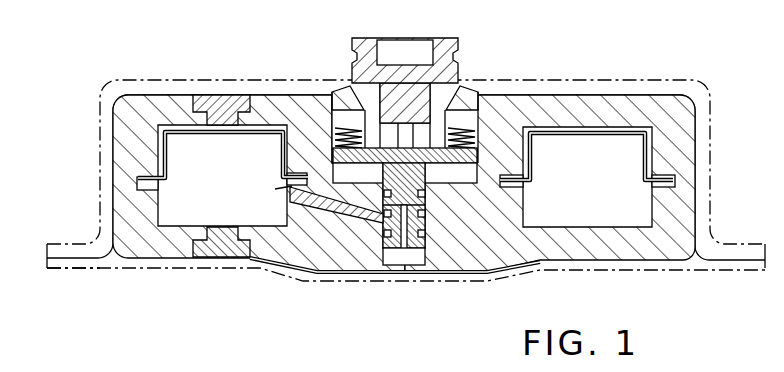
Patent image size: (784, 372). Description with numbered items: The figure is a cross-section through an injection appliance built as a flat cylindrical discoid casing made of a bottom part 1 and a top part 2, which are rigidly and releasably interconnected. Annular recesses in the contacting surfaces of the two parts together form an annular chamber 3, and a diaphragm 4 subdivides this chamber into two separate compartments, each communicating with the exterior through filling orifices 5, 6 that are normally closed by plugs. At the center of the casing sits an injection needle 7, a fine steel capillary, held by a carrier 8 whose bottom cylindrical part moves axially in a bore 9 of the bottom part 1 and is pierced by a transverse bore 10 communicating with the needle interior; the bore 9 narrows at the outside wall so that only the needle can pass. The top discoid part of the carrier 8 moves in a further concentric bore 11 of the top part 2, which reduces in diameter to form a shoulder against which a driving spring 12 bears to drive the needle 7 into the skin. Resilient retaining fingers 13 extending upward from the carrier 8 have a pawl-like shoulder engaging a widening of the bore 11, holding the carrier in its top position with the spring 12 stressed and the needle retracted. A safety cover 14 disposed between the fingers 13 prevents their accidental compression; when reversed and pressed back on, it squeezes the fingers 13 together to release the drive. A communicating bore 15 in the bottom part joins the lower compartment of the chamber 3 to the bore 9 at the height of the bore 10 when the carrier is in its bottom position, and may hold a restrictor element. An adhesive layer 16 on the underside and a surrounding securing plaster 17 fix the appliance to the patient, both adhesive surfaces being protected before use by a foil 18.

The bottom part 1 is at (657, 250).
The top part 2 is at (642, 100).
The annular chamber 3 is at (590, 217).
The diaphragm 4 is at (182, 128).
The filling orifice 5 is at (210, 253).
The filling orifice 6 is at (229, 97).
The injection needle 7 is at (415, 240).
The carrier 8 is at (422, 215).
The bore 9 is at (388, 247).
The bore 10 is at (428, 218).
The further concentric bore 11 is at (480, 147).
The driving spring 12 is at (347, 110).
The resilient retaining fingers 13 is at (370, 107).
The safety cover 14 is at (447, 47).
The communicating bore 15 is at (315, 213).
The adhesive layer 16 is at (406, 274).
The securing plaster 17 is at (105, 152).
The foil 18 is at (105, 263).